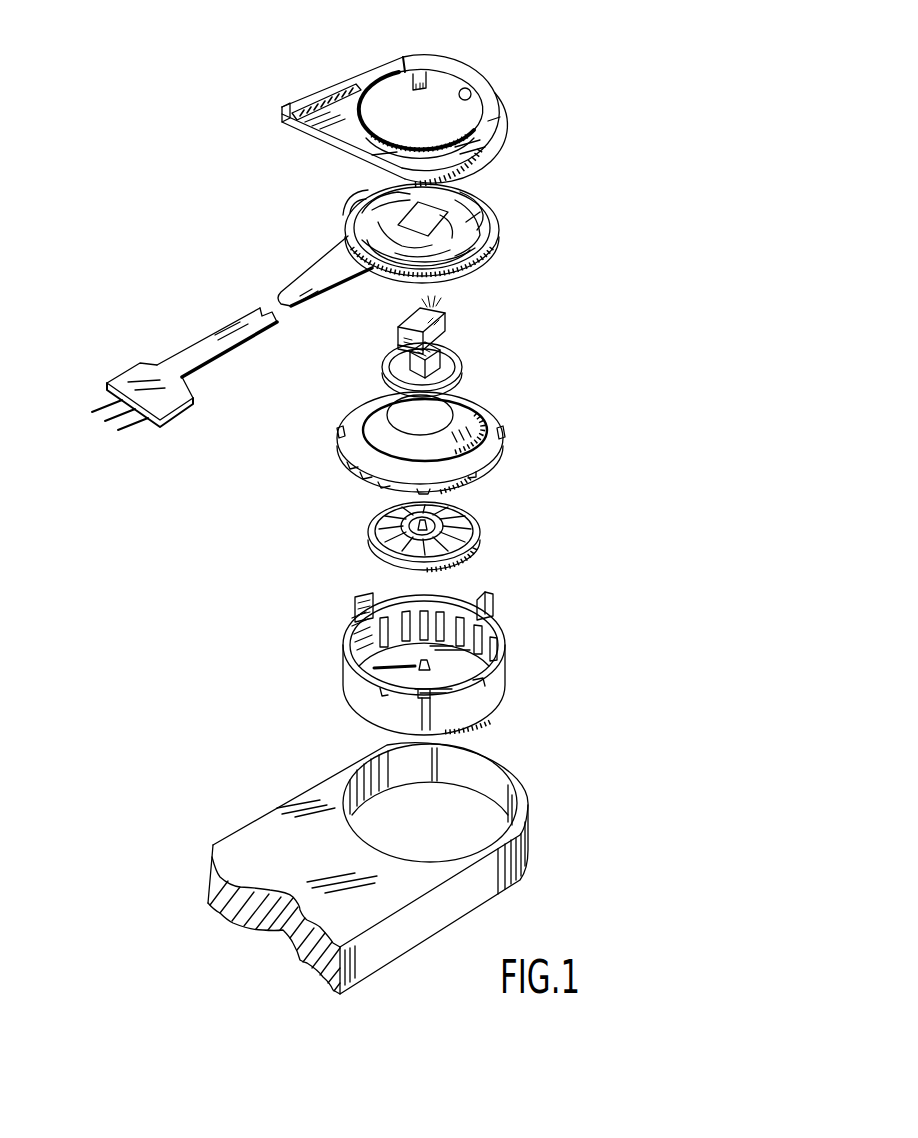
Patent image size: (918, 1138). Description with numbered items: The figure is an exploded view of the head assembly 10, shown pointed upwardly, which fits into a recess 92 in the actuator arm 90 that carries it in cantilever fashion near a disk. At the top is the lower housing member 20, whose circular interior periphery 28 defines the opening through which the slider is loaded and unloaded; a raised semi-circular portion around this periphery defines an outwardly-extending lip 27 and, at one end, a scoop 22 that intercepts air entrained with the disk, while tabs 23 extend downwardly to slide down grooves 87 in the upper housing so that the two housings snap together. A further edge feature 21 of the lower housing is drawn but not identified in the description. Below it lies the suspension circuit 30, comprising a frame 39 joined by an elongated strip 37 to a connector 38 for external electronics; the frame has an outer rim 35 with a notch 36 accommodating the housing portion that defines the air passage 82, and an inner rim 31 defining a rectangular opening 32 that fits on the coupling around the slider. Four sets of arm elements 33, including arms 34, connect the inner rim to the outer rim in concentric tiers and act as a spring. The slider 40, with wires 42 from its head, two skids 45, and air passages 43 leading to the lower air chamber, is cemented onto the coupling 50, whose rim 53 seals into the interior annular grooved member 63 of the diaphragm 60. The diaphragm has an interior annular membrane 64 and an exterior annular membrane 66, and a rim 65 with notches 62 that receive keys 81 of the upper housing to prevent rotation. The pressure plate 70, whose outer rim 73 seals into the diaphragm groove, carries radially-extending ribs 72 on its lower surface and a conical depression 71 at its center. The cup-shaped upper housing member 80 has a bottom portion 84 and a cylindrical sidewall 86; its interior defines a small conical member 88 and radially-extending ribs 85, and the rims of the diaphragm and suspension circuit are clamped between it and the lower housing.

The head assembly 10 is at (86, 752).
The lower housing member 20 is at (429, 100).
The notch 21 is at (404, 55).
The scoop 22 is at (330, 88).
The tabs 23 is at (432, 74).
The lip 27 is at (360, 164).
The circular interior periphery 28 is at (470, 89).
The suspension circuit 30 is at (352, 180).
The inner rim 31 is at (432, 190).
The rectangular opening 32 is at (362, 239).
The sets of arm elements 33 is at (477, 194).
The arm elements 34 is at (493, 233).
The outer rim 35 is at (467, 264).
The notch 36 is at (348, 210).
The elongated strip 37 is at (200, 347).
The connector 38 is at (120, 425).
The frame 39 is at (445, 236).
The slider 40 is at (457, 316).
The wires 42 is at (437, 298).
The air passages 43 is at (403, 327).
The skids 45 is at (417, 312).
The coupling 50 is at (486, 363).
The rim 53 is at (463, 373).
The diaphragm 60 is at (451, 438).
The notches 62 is at (365, 437).
The interior annular grooved member 63 is at (340, 434).
The interior annular membrane 64 is at (468, 430).
The rim 65 is at (340, 460).
The exterior annular membrane 66 is at (475, 455).
The pressure plate 70 is at (440, 532).
The conical depression 71 is at (400, 516).
The radially-extending ribs 72 is at (453, 533).
The outer rim 73 is at (370, 547).
The upper housing member 80 is at (439, 652).
The keys 81 is at (487, 598).
The air passage 82 is at (360, 620).
The bottom portion 84 is at (395, 653).
The radially-extending ribs 85 is at (500, 656).
The cylindrical sidewall 86 is at (505, 663).
The grooves 87 is at (431, 713).
The small conical member 88 is at (352, 674).
The actuator arm 90 is at (403, 868).
The recess 92 is at (470, 812).